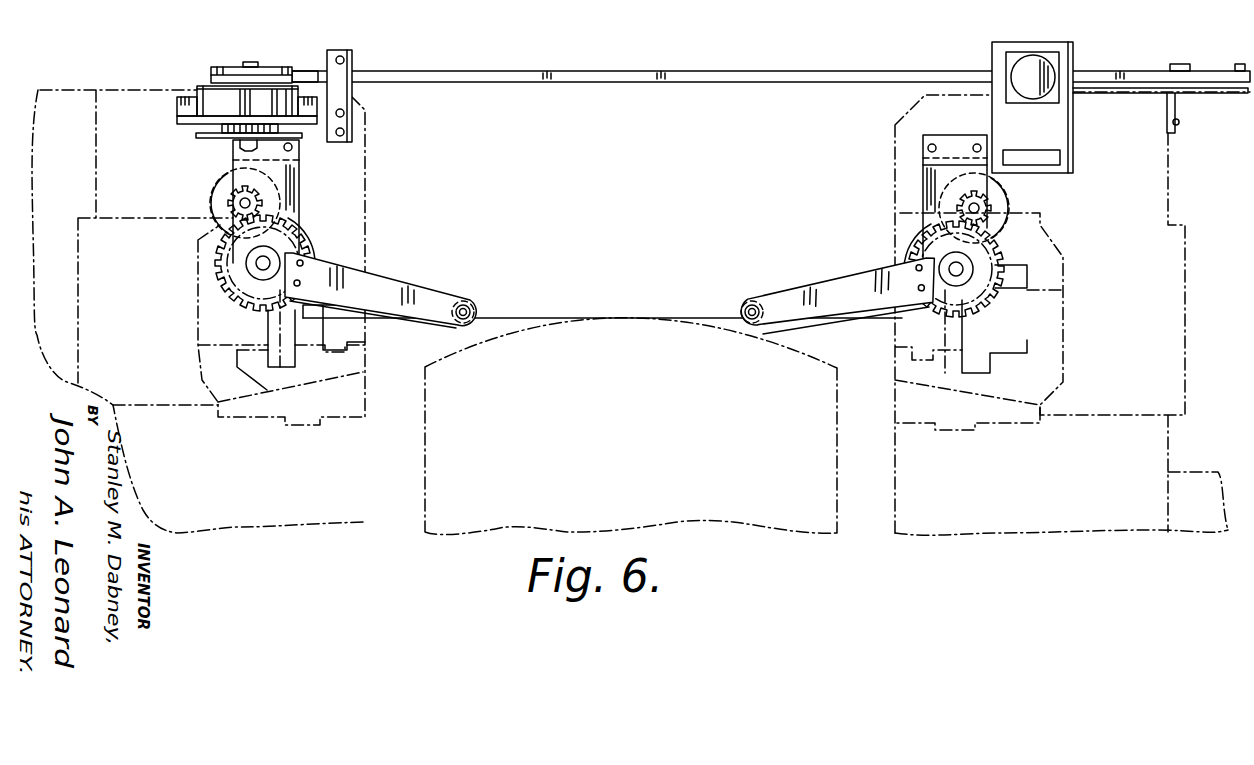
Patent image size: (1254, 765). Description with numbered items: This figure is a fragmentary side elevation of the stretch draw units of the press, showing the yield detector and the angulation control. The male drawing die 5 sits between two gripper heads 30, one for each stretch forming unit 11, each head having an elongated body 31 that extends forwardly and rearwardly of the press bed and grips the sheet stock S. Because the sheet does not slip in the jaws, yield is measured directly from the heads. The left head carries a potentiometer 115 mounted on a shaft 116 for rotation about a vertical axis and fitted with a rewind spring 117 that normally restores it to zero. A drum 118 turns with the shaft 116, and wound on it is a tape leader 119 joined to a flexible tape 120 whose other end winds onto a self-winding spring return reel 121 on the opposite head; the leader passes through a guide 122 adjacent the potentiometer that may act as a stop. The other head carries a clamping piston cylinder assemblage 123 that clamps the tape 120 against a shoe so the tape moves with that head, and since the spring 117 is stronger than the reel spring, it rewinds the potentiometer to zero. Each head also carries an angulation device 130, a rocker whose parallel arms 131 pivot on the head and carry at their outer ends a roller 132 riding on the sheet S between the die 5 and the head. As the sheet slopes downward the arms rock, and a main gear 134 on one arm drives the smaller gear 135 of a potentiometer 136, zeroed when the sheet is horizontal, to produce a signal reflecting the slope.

The male drawing die 5 is at (631, 426).
The sheet stock S is at (506, 320).
The stretch forming unit 11 is at (117, 80).
The gripper head 30 is at (374, 191).
The elongated body 31 is at (354, 236).
The potentiometer 115 is at (210, 97).
The shaft 116 is at (254, 62).
The rewind spring 117 is at (228, 133).
The drum 118 is at (222, 66).
The tape leader 119 is at (303, 70).
The flexible tape 120 is at (453, 72).
The self-winding spring return reel 121 is at (1207, 80).
The guide 122 is at (354, 58).
The clamping piston cylinder assemblage 123 is at (1040, 50).
The angulation device 130 is at (438, 282).
The arms 131 is at (403, 304).
The roller 132 is at (477, 302).
The main gear 134 is at (212, 270).
The smaller gear 135 is at (228, 204).
The potentiometer 136 is at (213, 216).